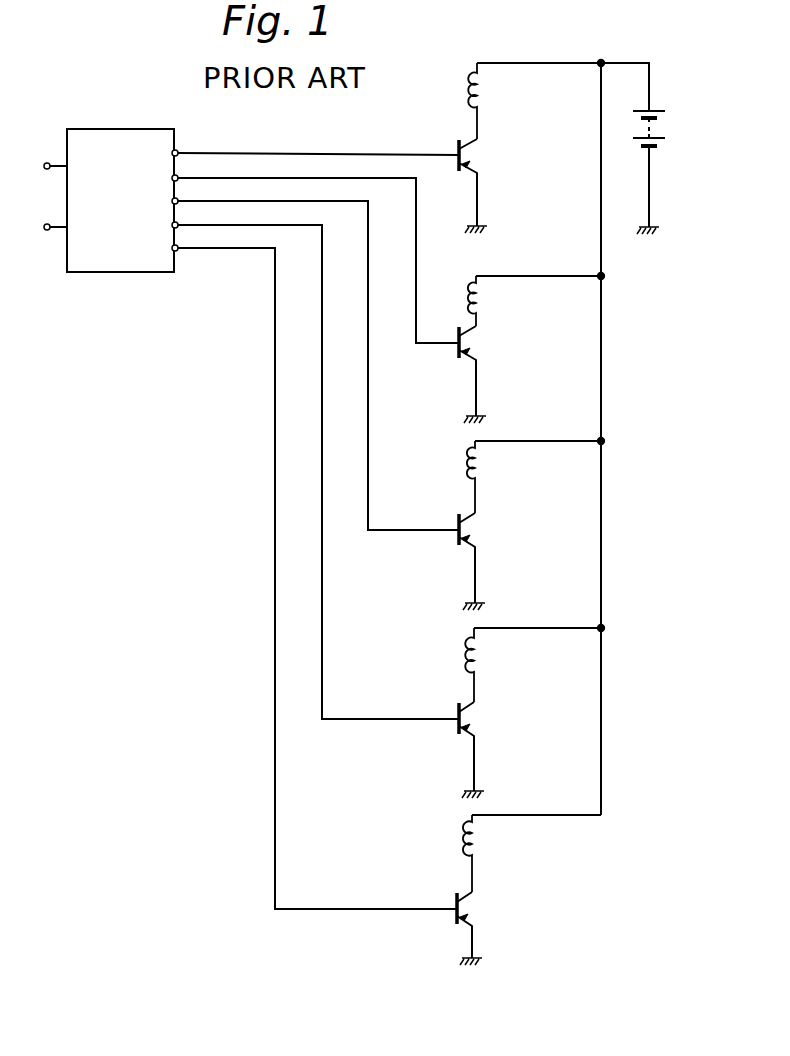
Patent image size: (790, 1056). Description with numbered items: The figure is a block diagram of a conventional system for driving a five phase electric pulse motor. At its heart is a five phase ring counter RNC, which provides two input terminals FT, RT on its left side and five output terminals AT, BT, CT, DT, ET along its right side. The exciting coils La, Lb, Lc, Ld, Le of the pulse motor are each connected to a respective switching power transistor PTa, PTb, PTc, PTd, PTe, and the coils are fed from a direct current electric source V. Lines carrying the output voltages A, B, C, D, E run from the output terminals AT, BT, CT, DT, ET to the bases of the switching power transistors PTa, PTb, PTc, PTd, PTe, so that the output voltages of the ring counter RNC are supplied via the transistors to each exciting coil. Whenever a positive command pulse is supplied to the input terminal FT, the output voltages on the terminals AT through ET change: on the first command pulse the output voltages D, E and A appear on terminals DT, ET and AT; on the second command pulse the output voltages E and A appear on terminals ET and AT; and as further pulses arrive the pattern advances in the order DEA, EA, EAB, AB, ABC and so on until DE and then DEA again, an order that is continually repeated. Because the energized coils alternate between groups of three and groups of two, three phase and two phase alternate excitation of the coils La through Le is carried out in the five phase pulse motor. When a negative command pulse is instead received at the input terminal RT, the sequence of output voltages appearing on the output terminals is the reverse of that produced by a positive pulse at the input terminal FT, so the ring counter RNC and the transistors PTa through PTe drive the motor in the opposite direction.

The five phase ring counter RNC is at (111, 137).
The input terminal FT is at (50, 180).
The input terminal RT is at (50, 242).
The output terminal AT is at (161, 153).
The output terminal BT is at (160, 178).
The output terminal CT is at (160, 201).
The output terminal DT is at (159, 225).
The output terminal ET is at (160, 248).
The output voltage A is at (318, 144).
The output voltage B is at (318, 250).
The output voltage C is at (318, 355).
The output voltage D is at (318, 461).
The output voltage E is at (317, 568).
The exciting coil La is at (473, 92).
The exciting coil Lb is at (473, 298).
The exciting coil Lc is at (465, 466).
The exciting coil Ld is at (465, 658).
The exciting coil Le is at (465, 845).
The switching power transistor PTa is at (476, 151).
The switching power transistor PTb is at (471, 343).
The switching power transistor PTc is at (471, 526).
The switching power transistor PTd is at (467, 712).
The switching power transistor PTe is at (474, 901).
The direct current electric source V is at (644, 148).